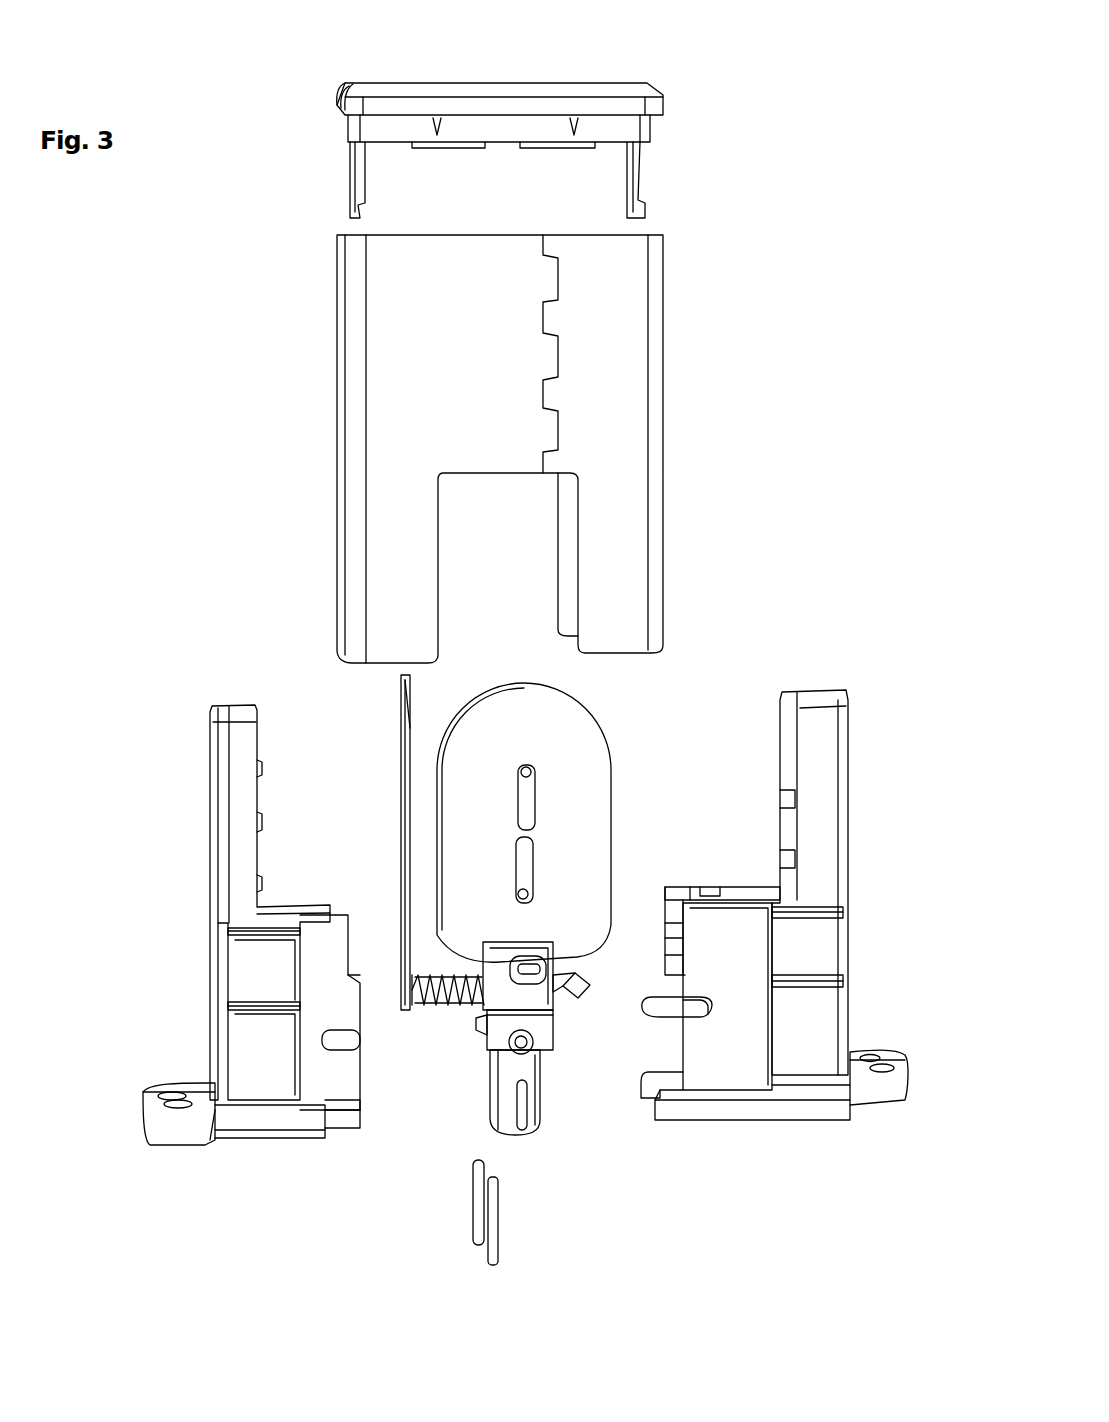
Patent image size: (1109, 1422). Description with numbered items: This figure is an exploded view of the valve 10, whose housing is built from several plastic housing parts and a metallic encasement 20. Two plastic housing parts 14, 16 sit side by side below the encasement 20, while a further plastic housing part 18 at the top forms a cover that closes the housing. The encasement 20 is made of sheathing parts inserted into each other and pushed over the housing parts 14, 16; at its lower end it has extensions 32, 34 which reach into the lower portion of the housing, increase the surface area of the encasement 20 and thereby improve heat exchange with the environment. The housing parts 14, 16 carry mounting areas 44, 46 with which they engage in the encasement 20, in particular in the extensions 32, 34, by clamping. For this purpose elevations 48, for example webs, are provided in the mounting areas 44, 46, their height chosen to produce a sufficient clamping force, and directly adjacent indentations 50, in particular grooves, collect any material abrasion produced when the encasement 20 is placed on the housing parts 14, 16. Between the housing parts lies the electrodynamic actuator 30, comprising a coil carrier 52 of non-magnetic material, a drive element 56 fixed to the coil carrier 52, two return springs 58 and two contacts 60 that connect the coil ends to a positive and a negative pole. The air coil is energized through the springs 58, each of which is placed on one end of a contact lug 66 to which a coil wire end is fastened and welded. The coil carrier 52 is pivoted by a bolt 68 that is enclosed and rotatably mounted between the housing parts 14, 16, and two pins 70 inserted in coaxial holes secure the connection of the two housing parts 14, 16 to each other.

The valve 10 is at (787, 246).
The plastic housing part 14 is at (332, 1085).
The plastic housing part 16 is at (758, 1040).
The plastic housing part 18 is at (400, 100).
The metallic encasement 20 is at (413, 394).
The electrodynamic actuator 30 is at (652, 753).
The extension 32 is at (408, 528).
The extension 34 is at (625, 540).
The mounting area 44 is at (245, 1065).
The mounting area 46 is at (812, 1040).
The elevation 48 is at (232, 936).
The indentation 50 is at (248, 935).
The coil carrier 52 is at (578, 858).
The drive element 56 is at (520, 1078).
The return spring 58 is at (432, 1010).
The contact 60 is at (400, 790).
The contact lug 66 is at (590, 990).
The bolt 68 is at (530, 1045).
The pin 70 is at (474, 1205).